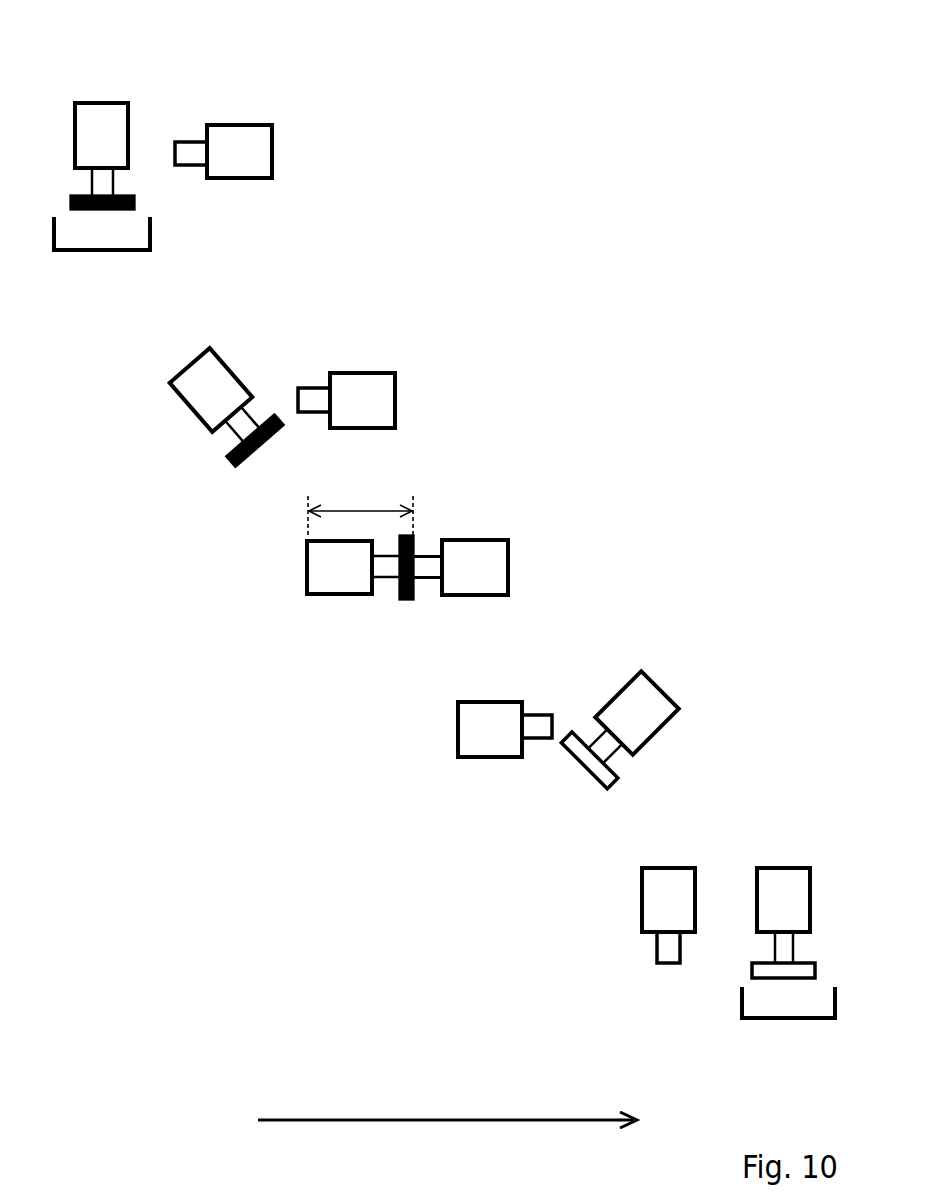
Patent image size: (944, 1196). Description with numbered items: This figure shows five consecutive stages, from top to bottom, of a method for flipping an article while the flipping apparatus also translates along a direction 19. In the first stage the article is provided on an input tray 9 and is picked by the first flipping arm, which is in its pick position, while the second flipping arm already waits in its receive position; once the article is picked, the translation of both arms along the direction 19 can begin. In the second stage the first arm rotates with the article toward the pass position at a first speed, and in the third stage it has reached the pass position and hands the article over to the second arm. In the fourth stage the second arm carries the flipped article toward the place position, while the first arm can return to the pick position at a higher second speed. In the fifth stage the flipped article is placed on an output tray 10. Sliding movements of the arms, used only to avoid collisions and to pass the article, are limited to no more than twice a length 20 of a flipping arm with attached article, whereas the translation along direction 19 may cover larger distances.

The input tray 9 is at (75, 250).
The output tray 10 is at (797, 1018).
The direction 19 is at (437, 1119).
The length 20 is at (367, 511).